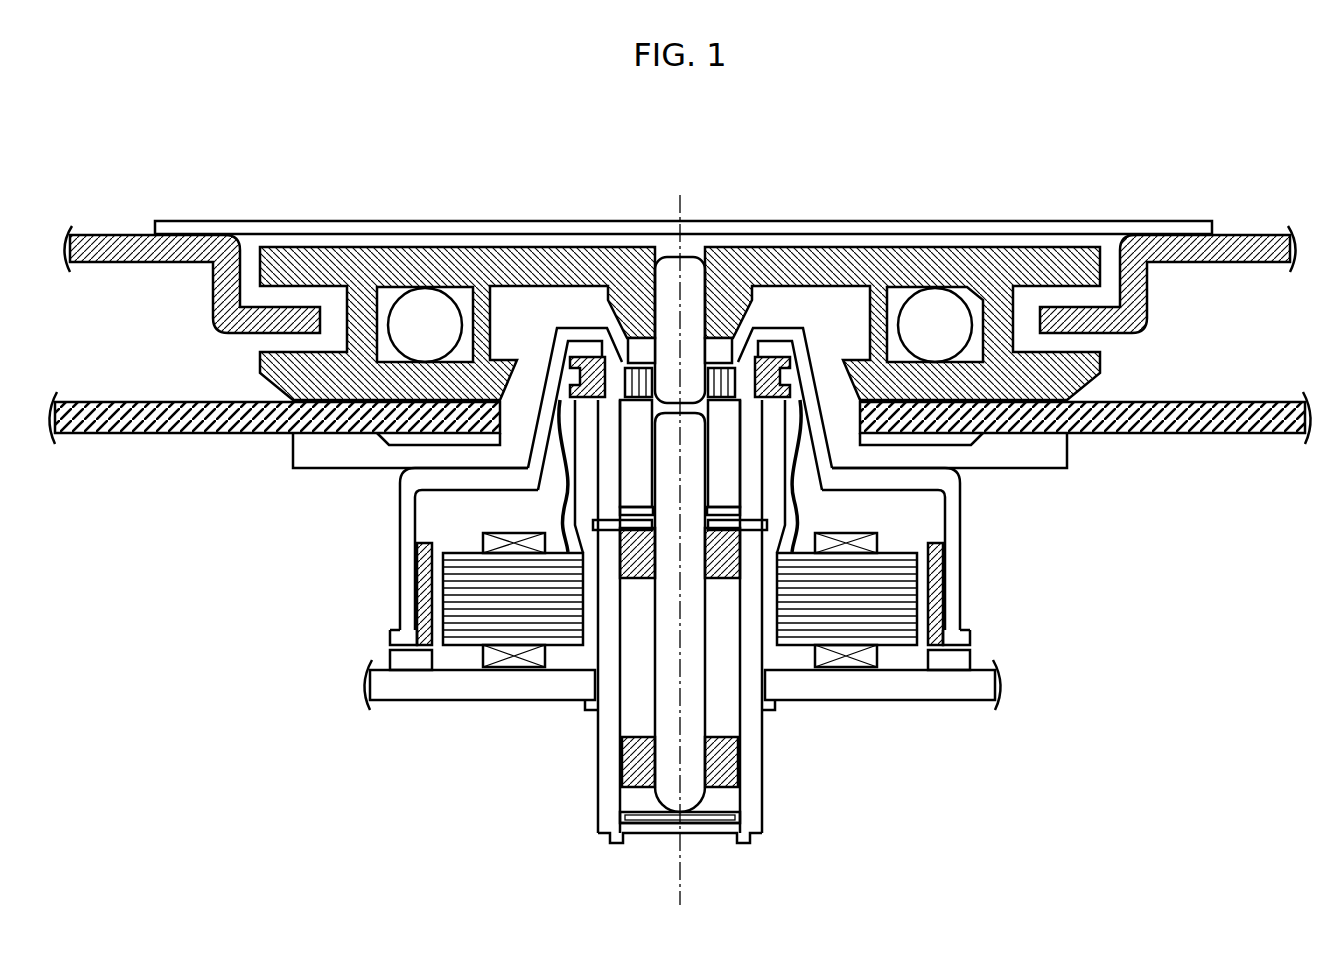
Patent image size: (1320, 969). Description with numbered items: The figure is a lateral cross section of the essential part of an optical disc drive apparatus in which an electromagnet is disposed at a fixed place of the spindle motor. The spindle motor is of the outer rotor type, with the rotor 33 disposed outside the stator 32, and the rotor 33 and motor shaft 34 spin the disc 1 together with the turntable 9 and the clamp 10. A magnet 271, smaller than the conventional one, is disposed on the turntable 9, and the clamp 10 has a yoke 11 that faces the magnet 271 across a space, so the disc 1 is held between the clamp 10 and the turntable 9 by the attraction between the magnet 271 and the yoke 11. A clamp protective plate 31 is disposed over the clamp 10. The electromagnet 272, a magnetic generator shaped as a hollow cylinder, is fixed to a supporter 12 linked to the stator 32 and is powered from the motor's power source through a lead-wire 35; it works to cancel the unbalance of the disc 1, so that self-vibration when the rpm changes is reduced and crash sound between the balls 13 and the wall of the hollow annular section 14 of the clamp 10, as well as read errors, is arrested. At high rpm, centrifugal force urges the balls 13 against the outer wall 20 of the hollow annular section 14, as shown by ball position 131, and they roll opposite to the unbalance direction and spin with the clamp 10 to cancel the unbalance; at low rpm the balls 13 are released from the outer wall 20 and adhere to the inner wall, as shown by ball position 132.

The disc 1 is at (135, 434).
The turntable 9 is at (1012, 452).
The clamp 10 is at (305, 255).
The yoke 11 is at (637, 348).
The supporter 12 is at (585, 517).
The balls 13 is at (657, 235).
The ball position 131 is at (410, 315).
The ball position 132 is at (922, 315).
The hollow annular section 14 is at (458, 300).
The outer wall 20 is at (977, 347).
The magnet 271 is at (718, 382).
The electromagnet 272 is at (768, 362).
The clamp protective plate 31 is at (1138, 232).
The stator 32 is at (770, 665).
The rotor 33 is at (953, 588).
The motor shaft 34 is at (670, 692).
The lead-wire 35 is at (577, 499).